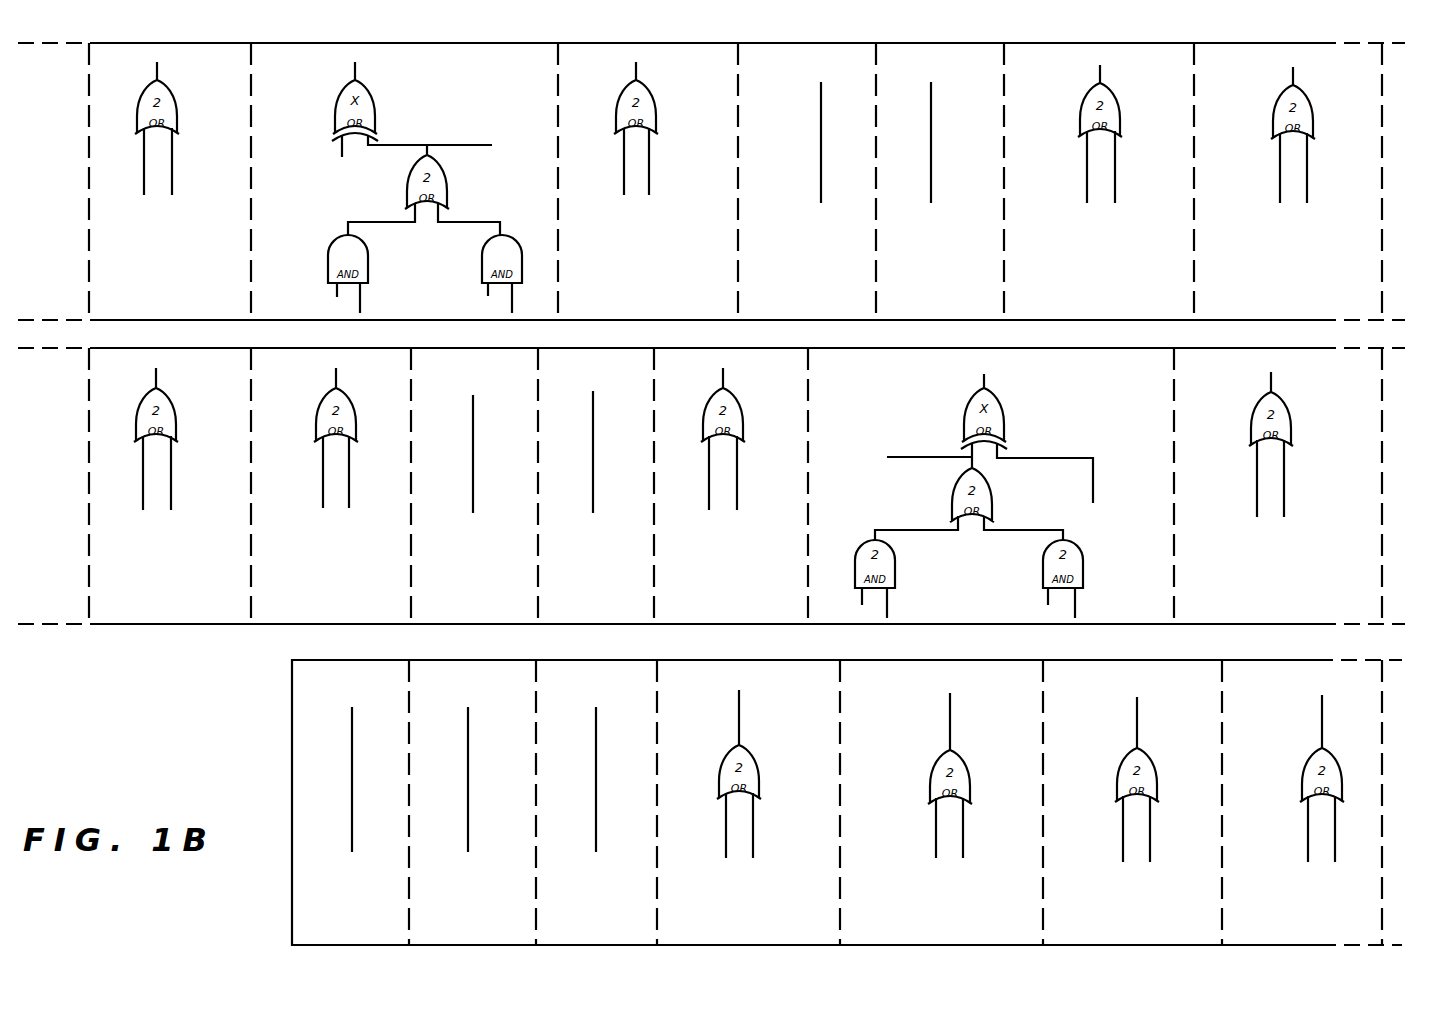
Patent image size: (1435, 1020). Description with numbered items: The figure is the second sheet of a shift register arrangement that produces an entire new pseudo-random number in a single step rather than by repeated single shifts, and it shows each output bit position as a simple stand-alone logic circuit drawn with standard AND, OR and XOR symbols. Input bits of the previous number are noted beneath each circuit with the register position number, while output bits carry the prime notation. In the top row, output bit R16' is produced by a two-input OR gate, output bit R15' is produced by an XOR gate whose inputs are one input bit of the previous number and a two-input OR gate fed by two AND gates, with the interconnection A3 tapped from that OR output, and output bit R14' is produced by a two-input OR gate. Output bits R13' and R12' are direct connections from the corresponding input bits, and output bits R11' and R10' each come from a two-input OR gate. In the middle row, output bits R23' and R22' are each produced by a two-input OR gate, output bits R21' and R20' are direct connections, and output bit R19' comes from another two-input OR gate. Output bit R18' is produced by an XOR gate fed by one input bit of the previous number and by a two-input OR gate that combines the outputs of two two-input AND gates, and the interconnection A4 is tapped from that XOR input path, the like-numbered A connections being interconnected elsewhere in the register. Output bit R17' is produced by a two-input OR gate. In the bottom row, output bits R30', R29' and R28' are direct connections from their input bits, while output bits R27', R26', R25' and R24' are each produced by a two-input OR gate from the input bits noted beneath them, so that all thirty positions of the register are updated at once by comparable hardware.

The output bit R16' is at (157, 137).
The output bit R15' is at (425, 183).
The output bit R14' is at (630, 137).
The output bit R13' is at (826, 137).
The output bit R12' is at (936, 137).
The output bit R11' is at (1091, 139).
The output bit R10' is at (1288, 139).
The output bit R23' is at (159, 445).
The output bit R22' is at (334, 445).
The output bit R21' is at (474, 445).
The output bit R20' is at (592, 445).
The output bit R19' is at (722, 445).
The output bit R18' is at (966, 491).
The output bit R17' is at (1269, 447).
The output bit R30' is at (354, 777).
The output bit R29' is at (469, 777).
The output bit R28' is at (601, 777).
The output bit R27' is at (734, 779).
The output bit R26' is at (957, 779).
The output bit R25' is at (1143, 779).
The output bit R24' is at (1314, 779).
The interconnection A3 is at (494, 130).
The interconnection A4 is at (864, 456).